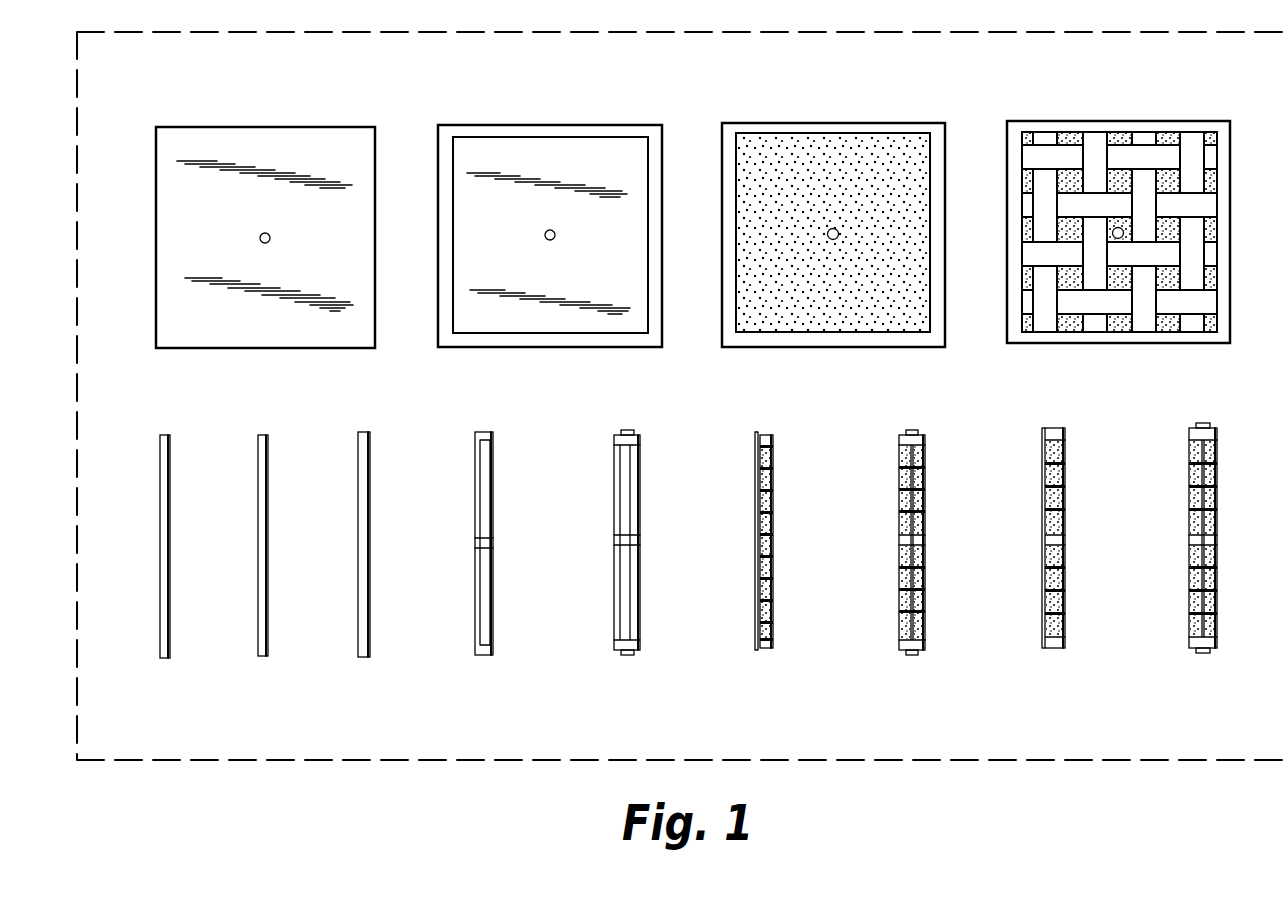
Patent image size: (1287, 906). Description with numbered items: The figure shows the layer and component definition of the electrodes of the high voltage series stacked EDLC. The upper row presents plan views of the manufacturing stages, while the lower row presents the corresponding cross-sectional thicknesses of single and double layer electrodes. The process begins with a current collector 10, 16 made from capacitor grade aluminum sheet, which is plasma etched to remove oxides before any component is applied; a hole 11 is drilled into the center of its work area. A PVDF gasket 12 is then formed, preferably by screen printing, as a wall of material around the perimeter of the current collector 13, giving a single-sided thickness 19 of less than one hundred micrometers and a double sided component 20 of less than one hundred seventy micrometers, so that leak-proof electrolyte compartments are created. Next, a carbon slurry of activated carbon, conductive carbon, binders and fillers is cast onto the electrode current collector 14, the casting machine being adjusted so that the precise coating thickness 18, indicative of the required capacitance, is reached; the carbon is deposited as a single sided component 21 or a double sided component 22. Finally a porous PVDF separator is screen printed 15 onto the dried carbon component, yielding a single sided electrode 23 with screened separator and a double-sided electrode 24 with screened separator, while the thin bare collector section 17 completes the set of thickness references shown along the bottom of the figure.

The current collector 10 is at (282, 122).
The hole 11 is at (260, 238).
The gasket 12 is at (496, 120).
The current collector 13 is at (582, 128).
The electrode current collector 14 is at (784, 120).
The screen printed separator 15 is at (1091, 146).
The current collector 16 is at (162, 650).
The panel edge view 17 is at (259, 648).
The coating thickness 18 is at (358, 647).
The single side gasket thickness 19 is at (475, 641).
The double sided component 20 is at (614, 633).
The single sided carbon component 21 is at (755, 626).
The double sided carbon component 22 is at (899, 629).
The single sided electrode with screened separator 23 is at (1042, 629).
The double-sided electrode with screened separator 24 is at (1189, 626).